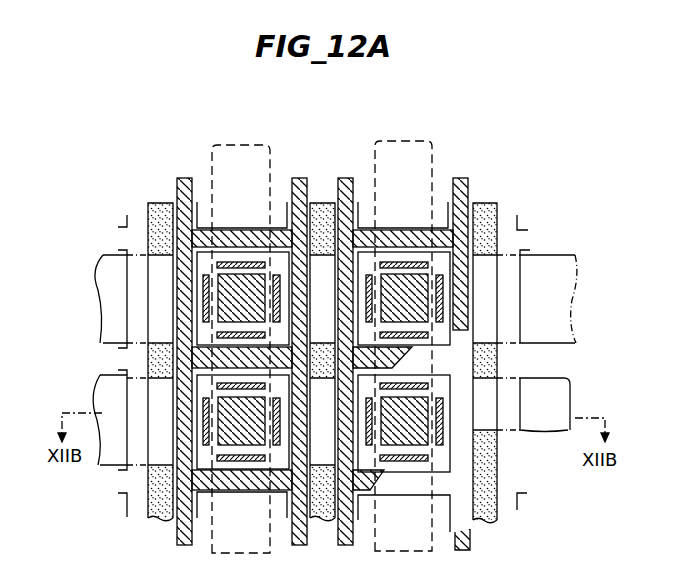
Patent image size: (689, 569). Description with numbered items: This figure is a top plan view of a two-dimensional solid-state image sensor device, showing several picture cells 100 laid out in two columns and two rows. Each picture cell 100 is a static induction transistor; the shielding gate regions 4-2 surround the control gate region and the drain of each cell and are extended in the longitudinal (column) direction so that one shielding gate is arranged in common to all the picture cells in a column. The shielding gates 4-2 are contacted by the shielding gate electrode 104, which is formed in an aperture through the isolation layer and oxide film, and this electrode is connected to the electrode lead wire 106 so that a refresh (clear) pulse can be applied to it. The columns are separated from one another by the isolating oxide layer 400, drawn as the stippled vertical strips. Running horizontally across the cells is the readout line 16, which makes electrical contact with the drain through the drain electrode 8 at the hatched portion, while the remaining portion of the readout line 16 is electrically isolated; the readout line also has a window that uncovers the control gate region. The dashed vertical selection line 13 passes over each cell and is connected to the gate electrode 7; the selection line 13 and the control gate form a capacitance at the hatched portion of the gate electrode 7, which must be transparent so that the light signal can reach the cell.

The isolating oxide layer 400 is at (160, 203).
The selection line 13 is at (261, 145).
The electrode lead wire 106 is at (299, 177).
The shielding gate electrode 104 is at (322, 360).
The readout line 16 is at (554, 254).
The gate electrode 7 is at (473, 528).
The drain electrode 8 is at (441, 412).
The picture cell 100 is at (457, 444).
The shielding gate region 4-2 is at (482, 477).